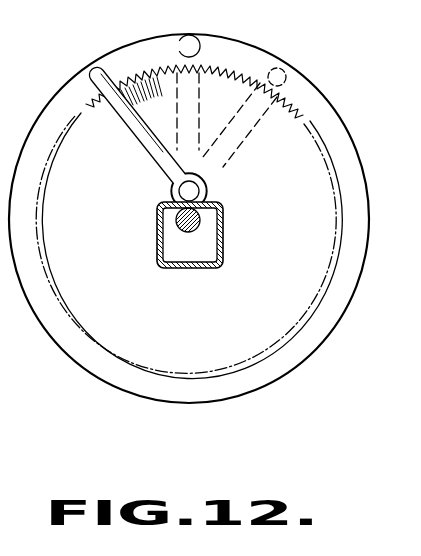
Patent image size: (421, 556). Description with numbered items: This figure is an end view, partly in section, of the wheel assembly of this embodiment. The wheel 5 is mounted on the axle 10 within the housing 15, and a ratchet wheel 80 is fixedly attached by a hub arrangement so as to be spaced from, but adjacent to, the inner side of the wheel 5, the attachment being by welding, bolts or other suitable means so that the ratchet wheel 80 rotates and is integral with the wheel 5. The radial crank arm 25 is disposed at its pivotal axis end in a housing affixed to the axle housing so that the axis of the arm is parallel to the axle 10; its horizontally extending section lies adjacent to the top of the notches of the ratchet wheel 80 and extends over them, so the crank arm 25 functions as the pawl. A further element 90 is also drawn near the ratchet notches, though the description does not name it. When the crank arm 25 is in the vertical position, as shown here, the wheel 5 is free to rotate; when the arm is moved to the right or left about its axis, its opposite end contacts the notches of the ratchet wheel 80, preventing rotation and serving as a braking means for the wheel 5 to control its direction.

The wheel 5 is at (297, 371).
The axle 10 is at (200, 227).
The housing 15 is at (182, 268).
The radial crank arm 25 is at (93, 68).
The ratchet wheel 80 is at (152, 88).
The locking pin 90 is at (297, 103).